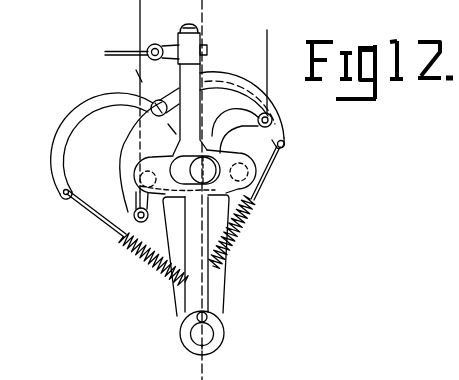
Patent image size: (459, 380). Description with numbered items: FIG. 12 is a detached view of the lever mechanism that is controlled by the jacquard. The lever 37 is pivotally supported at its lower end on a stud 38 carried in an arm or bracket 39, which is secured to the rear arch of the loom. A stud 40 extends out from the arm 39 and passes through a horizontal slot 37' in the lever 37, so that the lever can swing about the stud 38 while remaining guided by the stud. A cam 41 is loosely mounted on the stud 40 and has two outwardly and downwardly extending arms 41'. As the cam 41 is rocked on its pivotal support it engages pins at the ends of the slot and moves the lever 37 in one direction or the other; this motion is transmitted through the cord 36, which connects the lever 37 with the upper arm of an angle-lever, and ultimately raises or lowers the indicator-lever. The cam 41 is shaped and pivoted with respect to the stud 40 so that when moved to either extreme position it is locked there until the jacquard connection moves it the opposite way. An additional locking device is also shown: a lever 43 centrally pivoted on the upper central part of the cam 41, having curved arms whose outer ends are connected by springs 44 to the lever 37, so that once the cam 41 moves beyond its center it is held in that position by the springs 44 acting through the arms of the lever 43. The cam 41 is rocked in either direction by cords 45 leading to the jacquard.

The cord 36 is at (110, 58).
The lever 37 is at (206, 173).
The horizontal slot 37' is at (152, 170).
The stud 38 is at (204, 332).
The arm or bracket 39 is at (230, 267).
The stud 40 is at (213, 162).
The cam 41 is at (235, 131).
The arms 41' is at (197, 156).
The lever 43 is at (63, 131).
The springs 44 is at (112, 231).
The cords 45 is at (140, 24).